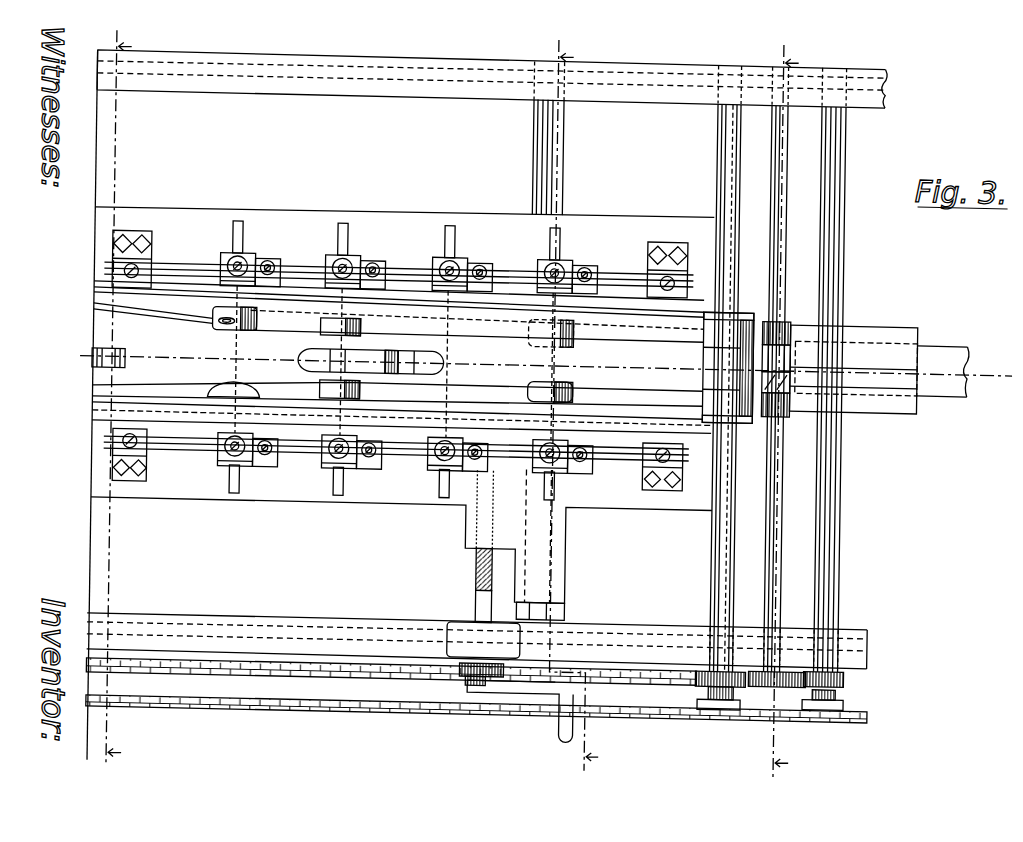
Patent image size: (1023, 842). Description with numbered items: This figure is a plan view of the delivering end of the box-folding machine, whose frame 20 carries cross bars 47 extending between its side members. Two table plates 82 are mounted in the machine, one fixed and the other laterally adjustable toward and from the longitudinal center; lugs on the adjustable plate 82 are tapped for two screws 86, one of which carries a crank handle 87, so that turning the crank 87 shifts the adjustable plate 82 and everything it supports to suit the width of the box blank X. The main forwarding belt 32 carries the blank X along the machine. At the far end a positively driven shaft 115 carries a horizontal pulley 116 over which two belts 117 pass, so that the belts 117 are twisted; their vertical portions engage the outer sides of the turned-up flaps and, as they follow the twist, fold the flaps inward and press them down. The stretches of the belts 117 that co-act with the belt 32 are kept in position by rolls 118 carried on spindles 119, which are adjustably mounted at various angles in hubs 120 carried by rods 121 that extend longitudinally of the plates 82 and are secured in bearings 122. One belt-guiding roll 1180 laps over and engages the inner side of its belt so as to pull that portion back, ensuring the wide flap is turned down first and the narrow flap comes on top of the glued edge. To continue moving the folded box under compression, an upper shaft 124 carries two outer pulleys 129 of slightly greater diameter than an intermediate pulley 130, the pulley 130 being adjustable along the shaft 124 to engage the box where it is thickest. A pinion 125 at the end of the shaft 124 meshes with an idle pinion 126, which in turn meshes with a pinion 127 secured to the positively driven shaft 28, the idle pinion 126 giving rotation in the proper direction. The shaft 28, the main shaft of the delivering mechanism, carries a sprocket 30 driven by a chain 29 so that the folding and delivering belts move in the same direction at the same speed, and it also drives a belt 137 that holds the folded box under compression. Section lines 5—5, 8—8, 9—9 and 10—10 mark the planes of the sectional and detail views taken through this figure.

The frame 20 is at (365, 91).
The cross bars 47 is at (530, 162).
The table plates 82 is at (262, 207).
The bearings 122 is at (150, 240).
The spindles 119 is at (243, 226).
The hubs 120 is at (219, 258).
The rods 121 is at (268, 260).
The main forwarding belt 32 is at (268, 357).
The rolls 118 is at (248, 328).
The belt-guiding roll 1180 is at (222, 380).
The belts 117 is at (398, 355).
The pulley 116 is at (703, 354).
The outer pulleys 129 is at (780, 320).
The intermediate pulley 130 is at (793, 374).
The box blank X is at (895, 318).
The belt 137 is at (970, 362).
The section line 5— 5 is at (80, 357).
The section line 8— 8 is at (114, 404).
The section line 9— 9 is at (594, 603).
The section line 10— 10 is at (778, 409).
The upper shaft 124 is at (784, 500).
The shaft 115 is at (714, 536).
The screws 86 is at (479, 590).
The crank handle 87 is at (560, 732).
The chain 29 is at (304, 706).
The shaft 28 is at (842, 575).
The idle pinion 126 is at (803, 657).
The pinion 127 is at (848, 664).
The pinion 125 is at (771, 675).
The sprocket 30 is at (835, 694).